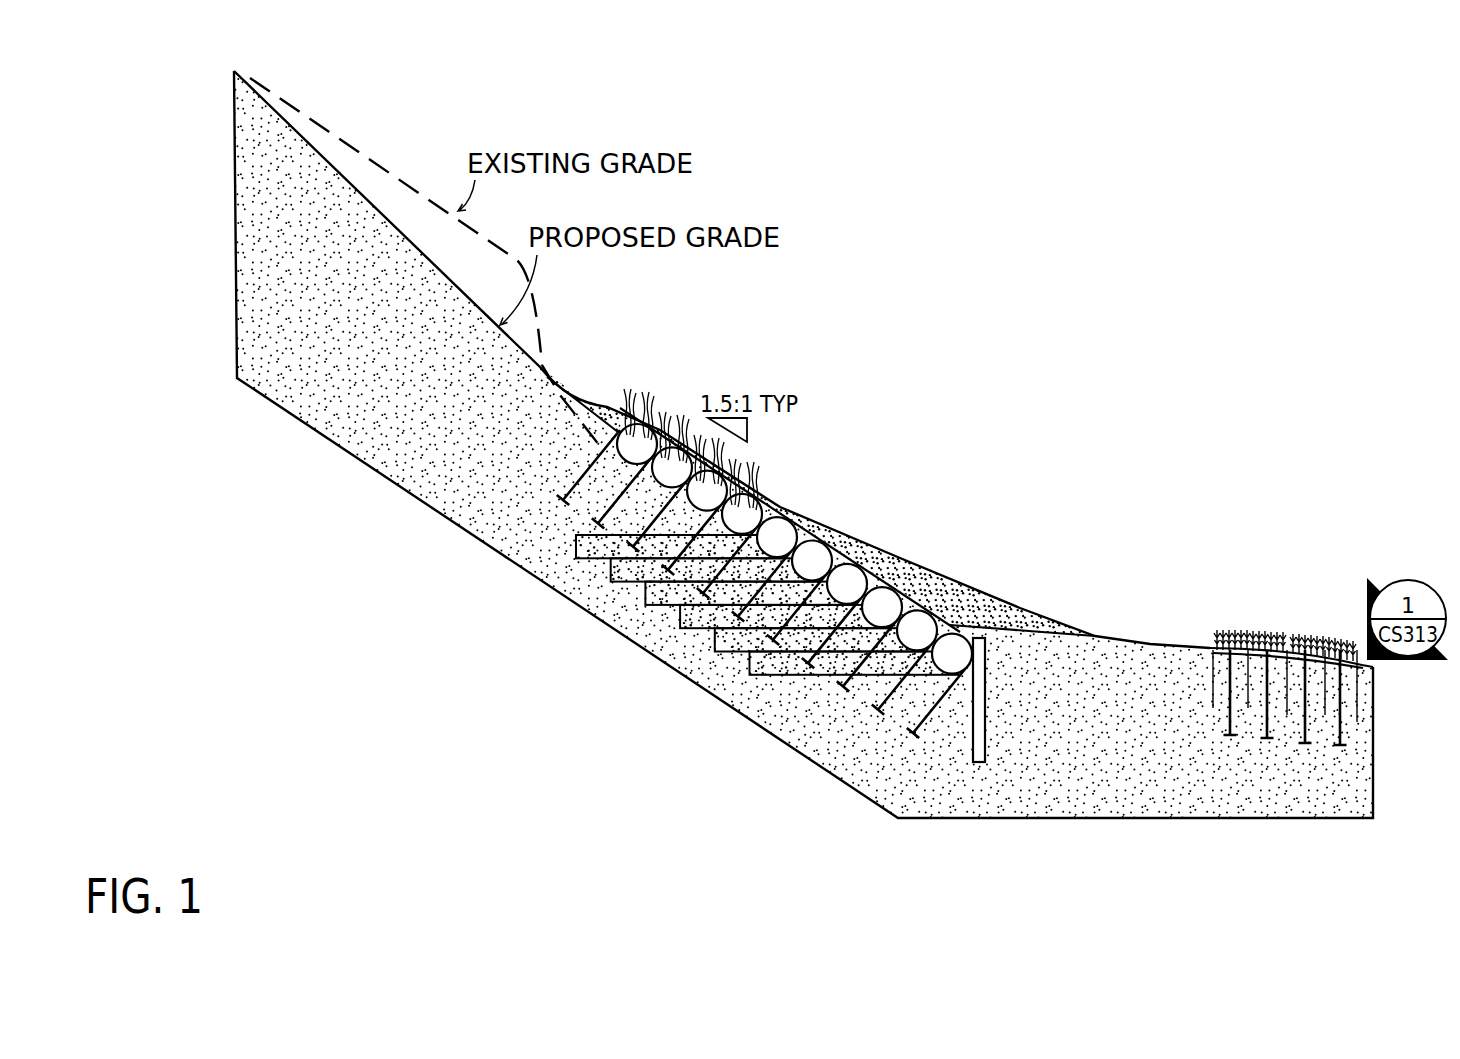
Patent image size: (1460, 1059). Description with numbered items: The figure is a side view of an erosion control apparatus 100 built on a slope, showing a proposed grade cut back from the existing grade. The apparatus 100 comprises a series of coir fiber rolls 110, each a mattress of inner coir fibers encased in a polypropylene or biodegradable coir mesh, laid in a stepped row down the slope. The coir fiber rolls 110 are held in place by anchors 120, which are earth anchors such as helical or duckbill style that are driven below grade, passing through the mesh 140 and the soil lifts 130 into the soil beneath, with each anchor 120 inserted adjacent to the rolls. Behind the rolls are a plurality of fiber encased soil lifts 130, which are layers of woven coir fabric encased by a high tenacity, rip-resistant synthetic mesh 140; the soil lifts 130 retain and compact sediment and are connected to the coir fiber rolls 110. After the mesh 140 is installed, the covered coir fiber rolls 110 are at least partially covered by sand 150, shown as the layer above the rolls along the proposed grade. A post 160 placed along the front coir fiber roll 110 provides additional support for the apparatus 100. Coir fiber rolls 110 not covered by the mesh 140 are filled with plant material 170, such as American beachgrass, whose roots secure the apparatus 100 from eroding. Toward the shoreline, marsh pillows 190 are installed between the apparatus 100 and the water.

The erosion control apparatus 100 is at (797, 58).
The coir fiber roll 110 is at (673, 447).
The anchor 120 is at (810, 597).
The soil lift 130 is at (782, 673).
The synthetic mesh 140 is at (923, 627).
The sand 150 is at (912, 558).
The post 160 is at (978, 763).
The plant material 170 is at (763, 503).
The marsh pillow 190 is at (1210, 647).